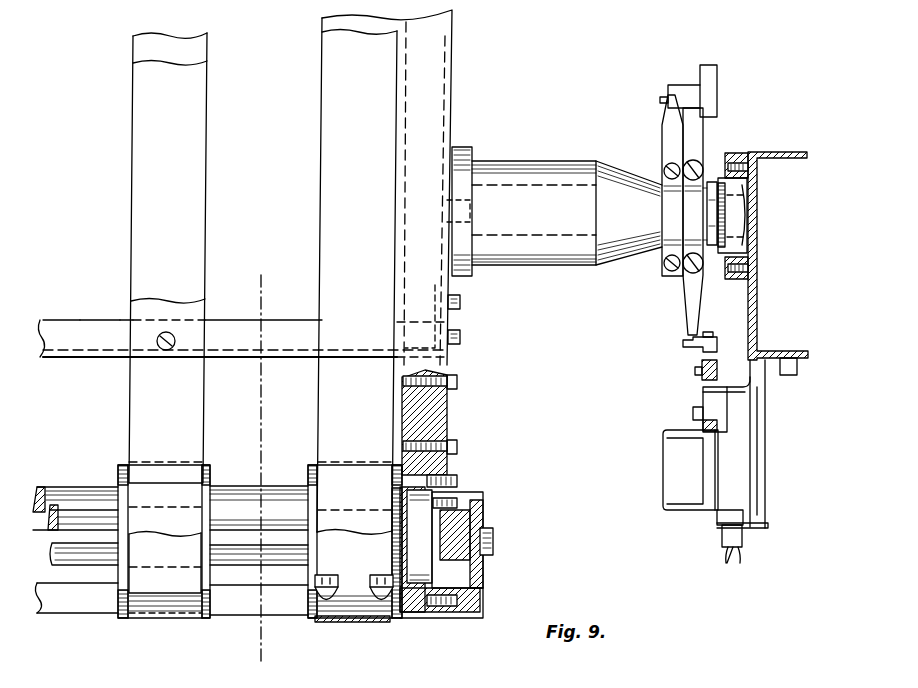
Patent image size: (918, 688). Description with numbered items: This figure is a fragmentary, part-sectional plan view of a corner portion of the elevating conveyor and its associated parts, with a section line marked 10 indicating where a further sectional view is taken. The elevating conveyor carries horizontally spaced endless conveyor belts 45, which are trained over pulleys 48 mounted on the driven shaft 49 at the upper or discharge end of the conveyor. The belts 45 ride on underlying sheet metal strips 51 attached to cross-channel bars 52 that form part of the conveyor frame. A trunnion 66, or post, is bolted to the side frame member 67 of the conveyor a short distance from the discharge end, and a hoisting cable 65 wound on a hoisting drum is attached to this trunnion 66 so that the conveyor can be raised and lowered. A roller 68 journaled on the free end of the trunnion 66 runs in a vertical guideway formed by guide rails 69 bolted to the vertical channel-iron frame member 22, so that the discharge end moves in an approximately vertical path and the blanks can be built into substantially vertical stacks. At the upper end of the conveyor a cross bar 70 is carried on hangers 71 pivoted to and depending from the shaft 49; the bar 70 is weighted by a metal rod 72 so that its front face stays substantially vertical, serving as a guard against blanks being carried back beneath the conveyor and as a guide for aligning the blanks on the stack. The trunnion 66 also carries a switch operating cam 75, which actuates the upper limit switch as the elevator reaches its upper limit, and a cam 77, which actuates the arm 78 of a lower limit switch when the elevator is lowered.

The section line 10- 10 is at (238, 287).
The vertical channel-iron frame members 22 is at (758, 303).
The endless conveyor belts 45 is at (330, 228).
The pulleys 48 is at (118, 475).
The driven shaft 49 is at (277, 510).
The sheet metal strips 51 is at (137, 383).
The cross-channel bars 52 is at (90, 326).
The cables 65 is at (715, 182).
The trunnions 66 is at (620, 180).
The side frame members 67 is at (447, 100).
The rollers 68 is at (733, 214).
The guide rails 69 is at (738, 154).
The cross bar 70 is at (70, 600).
The hangers 71 is at (482, 497).
The metal rod 72 is at (58, 466).
The switch operating cam 75 is at (709, 88).
The cam 77 is at (703, 356).
The arm of lower limit switch 78 is at (703, 390).